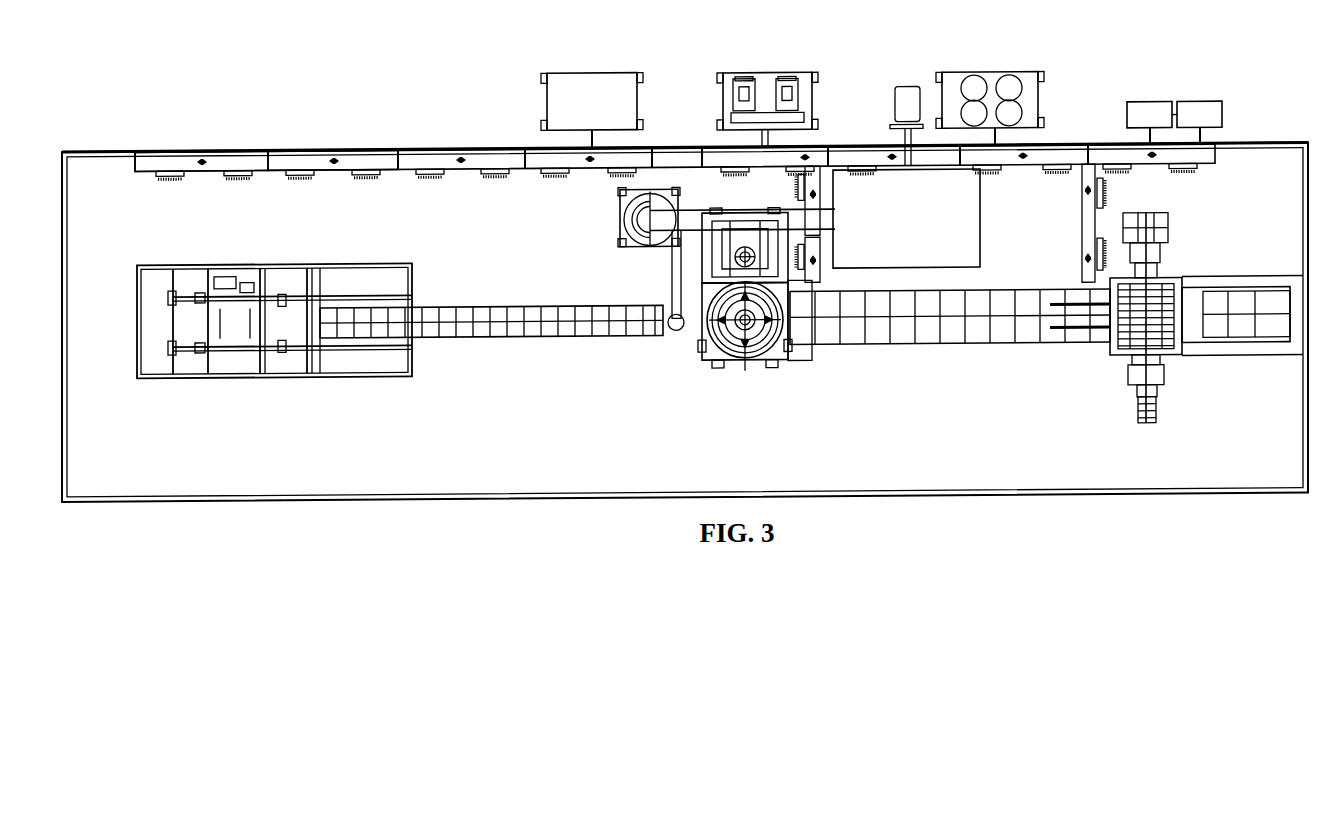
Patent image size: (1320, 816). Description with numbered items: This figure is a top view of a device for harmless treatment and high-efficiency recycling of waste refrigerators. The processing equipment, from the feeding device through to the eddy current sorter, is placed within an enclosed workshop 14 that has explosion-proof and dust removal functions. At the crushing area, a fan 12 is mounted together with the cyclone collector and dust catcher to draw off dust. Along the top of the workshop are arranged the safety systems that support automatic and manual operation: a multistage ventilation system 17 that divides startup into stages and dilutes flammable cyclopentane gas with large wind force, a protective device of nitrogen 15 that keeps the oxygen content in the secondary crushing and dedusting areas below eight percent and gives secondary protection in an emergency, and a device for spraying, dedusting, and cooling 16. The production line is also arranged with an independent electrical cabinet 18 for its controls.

The fan 12 is at (740, 117).
The enclosed workshop 14 is at (245, 153).
The protective device of nitrogen 15 is at (1008, 94).
The device for spraying, dedusting, and cooling 16 is at (588, 106).
The multistage ventilation system 17 is at (458, 163).
The independent electrical cabinet 18 is at (1152, 123).